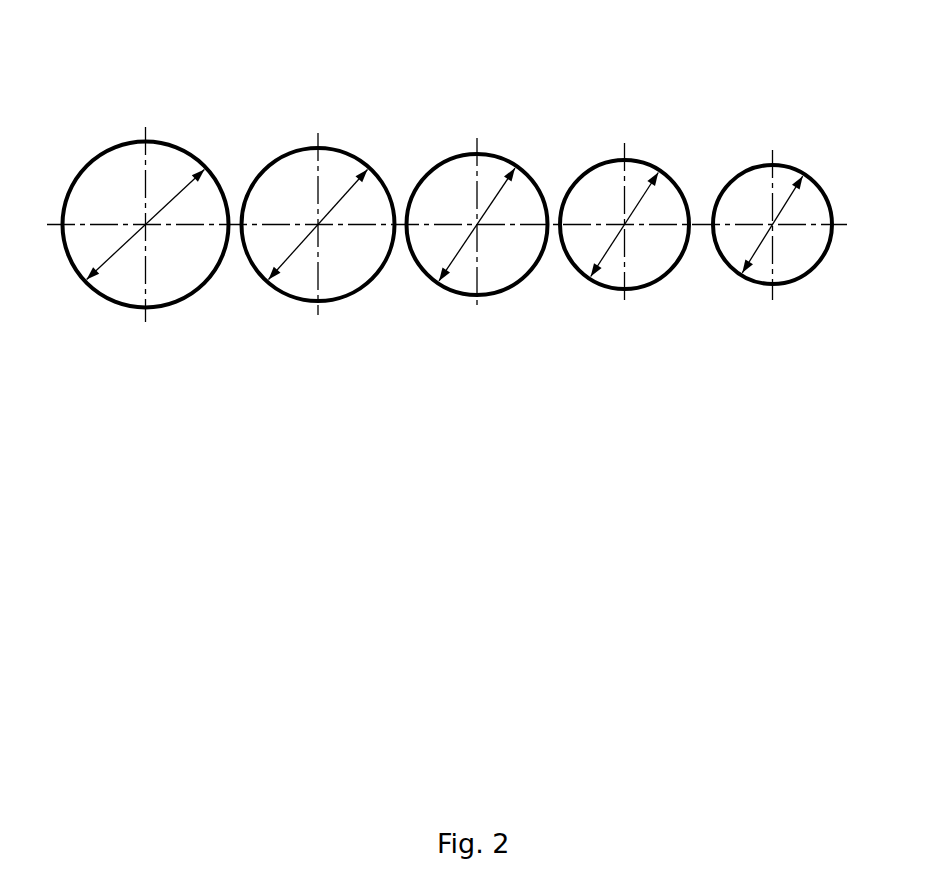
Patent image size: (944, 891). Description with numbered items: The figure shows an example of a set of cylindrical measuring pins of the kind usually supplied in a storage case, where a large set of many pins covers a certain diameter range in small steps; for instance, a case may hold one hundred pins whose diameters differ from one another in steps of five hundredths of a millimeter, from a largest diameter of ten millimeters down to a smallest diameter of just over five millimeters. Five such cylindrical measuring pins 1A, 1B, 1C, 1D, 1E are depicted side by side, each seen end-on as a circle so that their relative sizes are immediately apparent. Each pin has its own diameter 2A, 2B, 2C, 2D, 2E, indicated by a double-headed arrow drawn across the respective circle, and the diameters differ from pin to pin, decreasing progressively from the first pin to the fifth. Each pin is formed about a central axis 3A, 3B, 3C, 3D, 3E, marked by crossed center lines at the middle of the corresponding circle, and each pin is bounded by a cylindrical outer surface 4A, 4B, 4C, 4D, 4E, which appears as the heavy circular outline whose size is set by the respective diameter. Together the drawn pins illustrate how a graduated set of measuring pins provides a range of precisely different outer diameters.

The cylindrical measuring pin 1A is at (138, 205).
The cylindrical measuring pin 1B is at (313, 206).
The cylindrical measuring pin 1C is at (473, 210).
The cylindrical measuring pin 1D is at (623, 211).
The cylindrical measuring pin 1E is at (771, 213).
The diameter 2A is at (161, 194).
The diameter 2B is at (334, 195).
The diameter 2C is at (498, 196).
The diameter 2D is at (649, 194).
The diameter 2E is at (795, 191).
The central axis 3A is at (190, 262).
The central axis 3B is at (361, 265).
The central axis 3C is at (521, 267).
The central axis 3D is at (670, 270).
The central axis 3E is at (816, 273).
The cylindrical outer surface 4A is at (135, 250).
The cylindrical outer surface 4B is at (311, 253).
The cylindrical outer surface 4C is at (472, 256).
The cylindrical outer surface 4D is at (617, 254).
The cylindrical outer surface 4E is at (764, 255).